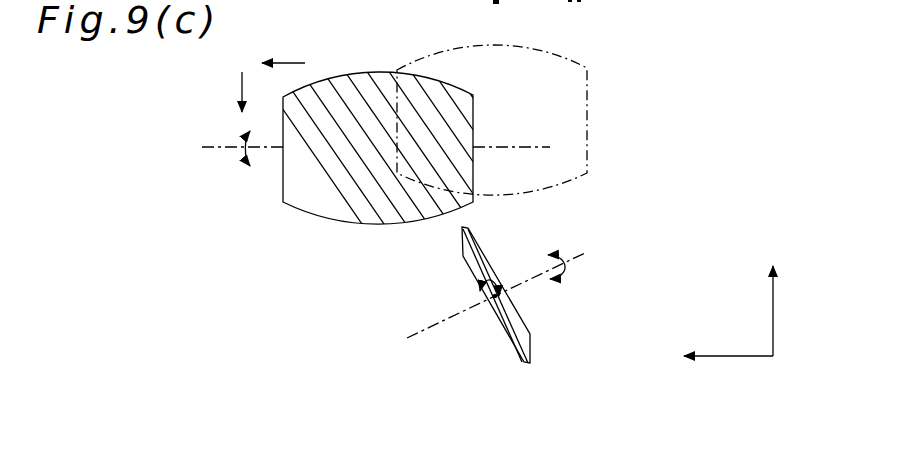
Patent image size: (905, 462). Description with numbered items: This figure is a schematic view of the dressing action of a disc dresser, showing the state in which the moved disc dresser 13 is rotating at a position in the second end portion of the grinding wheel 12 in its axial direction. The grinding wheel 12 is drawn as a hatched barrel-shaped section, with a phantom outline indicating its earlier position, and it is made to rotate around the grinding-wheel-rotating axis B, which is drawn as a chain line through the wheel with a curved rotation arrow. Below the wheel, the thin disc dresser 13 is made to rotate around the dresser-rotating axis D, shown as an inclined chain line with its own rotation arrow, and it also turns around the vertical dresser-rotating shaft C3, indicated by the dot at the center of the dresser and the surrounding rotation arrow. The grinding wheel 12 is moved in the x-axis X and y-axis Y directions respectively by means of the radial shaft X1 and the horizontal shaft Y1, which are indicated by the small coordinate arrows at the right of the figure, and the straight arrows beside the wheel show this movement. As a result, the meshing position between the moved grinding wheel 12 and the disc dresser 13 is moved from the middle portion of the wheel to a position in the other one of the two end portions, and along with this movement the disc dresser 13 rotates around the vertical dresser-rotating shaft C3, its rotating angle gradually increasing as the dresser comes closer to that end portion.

The grinding wheel 12 is at (350, 76).
The disc dresser 13 is at (532, 336).
The vertical dresser-rotating shaft C3 is at (494, 296).
The grinding-wheel-rotating axis B is at (366, 148).
The dresser-rotating axis D is at (507, 289).
The radial shaft X1 is at (775, 308).
The horizontal shaft Y1 is at (740, 357).
The x-axis X is at (774, 246).
The y-axis Y is at (663, 356).